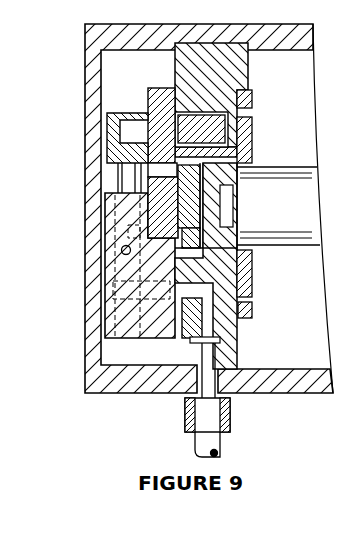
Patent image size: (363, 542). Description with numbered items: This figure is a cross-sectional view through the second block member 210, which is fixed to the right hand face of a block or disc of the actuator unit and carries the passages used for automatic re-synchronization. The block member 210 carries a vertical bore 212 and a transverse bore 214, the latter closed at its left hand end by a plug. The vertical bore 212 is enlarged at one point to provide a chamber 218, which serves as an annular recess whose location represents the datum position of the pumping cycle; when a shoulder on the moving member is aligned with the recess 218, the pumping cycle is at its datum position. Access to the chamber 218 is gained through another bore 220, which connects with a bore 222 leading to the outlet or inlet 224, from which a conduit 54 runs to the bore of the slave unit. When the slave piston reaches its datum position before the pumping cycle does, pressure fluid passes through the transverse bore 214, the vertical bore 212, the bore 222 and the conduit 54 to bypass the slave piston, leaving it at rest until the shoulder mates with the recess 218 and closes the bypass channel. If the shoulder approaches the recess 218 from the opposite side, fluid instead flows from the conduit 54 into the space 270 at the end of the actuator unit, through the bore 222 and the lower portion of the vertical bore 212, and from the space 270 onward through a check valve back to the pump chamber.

The second block member 210 is at (90, 206).
The vertical bore 212 is at (103, 345).
The transverse bore 214 is at (121, 250).
The chamber 218 is at (113, 283).
The bore 220 is at (153, 295).
The bore 222 is at (245, 338).
The outlet (or inlet) 224 is at (230, 410).
The conduit 54 is at (222, 440).
The space 270 is at (130, 362).